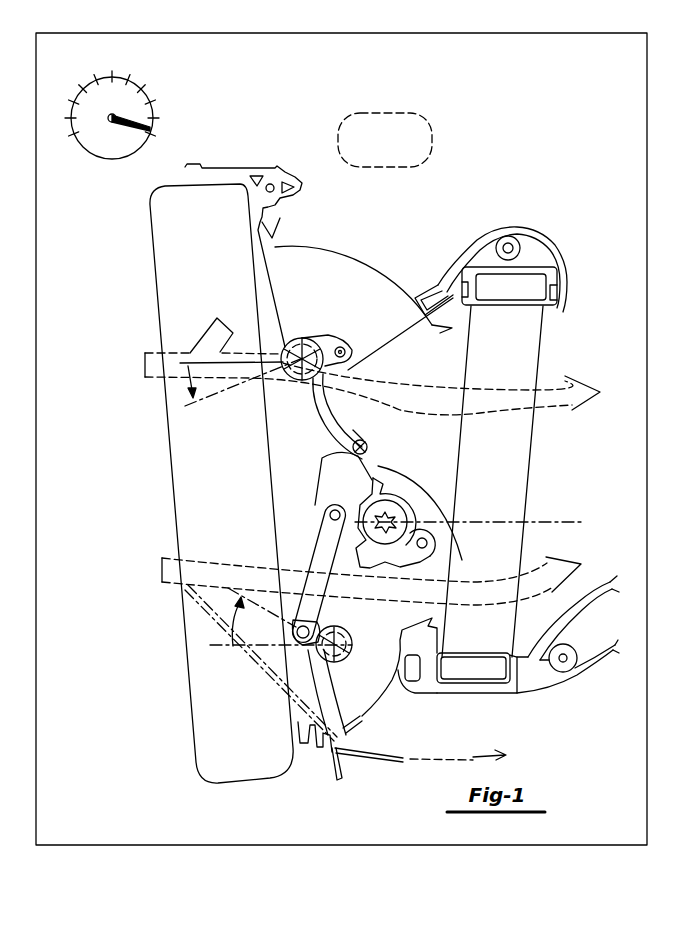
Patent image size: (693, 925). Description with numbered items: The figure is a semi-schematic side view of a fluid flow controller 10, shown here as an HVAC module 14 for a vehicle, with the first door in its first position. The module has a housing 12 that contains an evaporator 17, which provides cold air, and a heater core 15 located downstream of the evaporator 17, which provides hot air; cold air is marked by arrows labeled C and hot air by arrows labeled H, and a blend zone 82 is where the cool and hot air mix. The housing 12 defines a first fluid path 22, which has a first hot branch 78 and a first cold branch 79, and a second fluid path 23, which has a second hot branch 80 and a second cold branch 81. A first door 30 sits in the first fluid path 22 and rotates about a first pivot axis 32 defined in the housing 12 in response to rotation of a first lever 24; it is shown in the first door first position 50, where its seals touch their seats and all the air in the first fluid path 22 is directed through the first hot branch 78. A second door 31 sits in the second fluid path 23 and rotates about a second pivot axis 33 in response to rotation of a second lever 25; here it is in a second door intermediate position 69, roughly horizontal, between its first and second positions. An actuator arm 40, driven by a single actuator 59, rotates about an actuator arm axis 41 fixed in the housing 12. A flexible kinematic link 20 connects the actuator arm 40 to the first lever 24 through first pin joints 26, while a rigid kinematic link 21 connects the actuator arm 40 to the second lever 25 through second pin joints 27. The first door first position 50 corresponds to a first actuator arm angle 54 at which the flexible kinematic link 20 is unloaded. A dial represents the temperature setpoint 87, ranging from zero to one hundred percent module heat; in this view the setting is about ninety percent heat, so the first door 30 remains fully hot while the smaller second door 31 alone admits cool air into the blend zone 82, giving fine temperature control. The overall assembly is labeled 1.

The vehicle seat assembly 1 is at (648, 58).
The temperature setpoint 87 is at (150, 90).
The fluid flow controller 10 is at (215, 148).
The HVAC module 14 is at (217, 140).
The blend zone 82 is at (436, 143).
The evaporator 17 is at (160, 205).
The housing 12 is at (262, 166).
The first door 30 is at (368, 250).
The heater core 15 is at (513, 293).
The first hot branch 78 is at (560, 378).
The first fluid path 22 is at (152, 352).
The first cold branch 79 is at (205, 338).
The first door first position 50 is at (177, 383).
The first pivot axis 32 is at (278, 345).
The first lever 24 is at (305, 338).
The first pin joints 26 is at (346, 350).
The flexible kinematic link 20 is at (312, 414).
The actuator arm 40 is at (338, 470).
The first actuator arm angle 54 is at (439, 518).
The actuator arm axis 41 is at (366, 514).
The single actuator 59 is at (446, 553).
The second pin joints 27 is at (325, 512).
The rigid kinematic link 21 is at (300, 532).
The second hot branch 80 is at (530, 557).
The second fluid path 23 is at (170, 593).
The second door intermediate position 69 is at (212, 630).
The second pivot axis 33 is at (338, 628).
The second lever 25 is at (321, 662).
The second door 31 is at (375, 712).
The second cold branch 81 is at (400, 765).